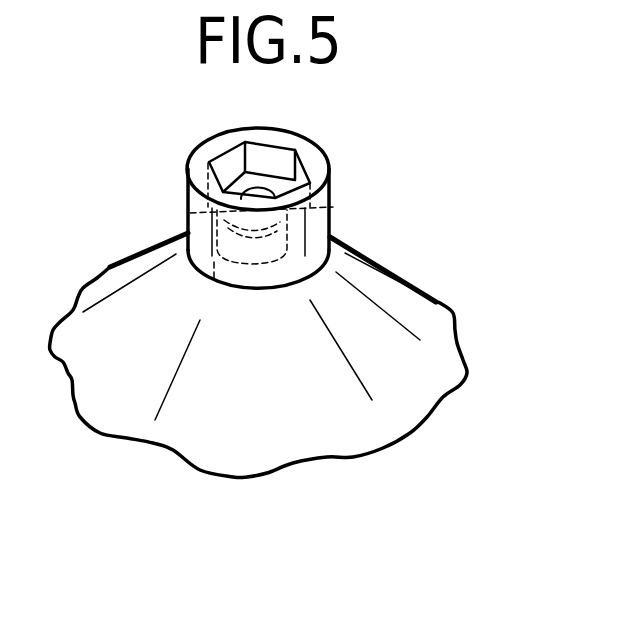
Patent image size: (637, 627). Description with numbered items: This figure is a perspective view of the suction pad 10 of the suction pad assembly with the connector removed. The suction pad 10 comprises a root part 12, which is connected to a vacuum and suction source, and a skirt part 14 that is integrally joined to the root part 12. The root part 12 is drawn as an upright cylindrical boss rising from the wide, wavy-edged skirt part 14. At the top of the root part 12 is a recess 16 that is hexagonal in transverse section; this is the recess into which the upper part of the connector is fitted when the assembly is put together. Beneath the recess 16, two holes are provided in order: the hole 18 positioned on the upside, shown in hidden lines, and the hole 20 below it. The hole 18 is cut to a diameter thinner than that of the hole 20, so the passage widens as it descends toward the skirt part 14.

The suction pad 10 is at (383, 235).
The root part 12 is at (333, 210).
The skirt part 14 is at (427, 313).
The recess 16 is at (223, 162).
The hole 18 is at (190, 213).
The hole 20 is at (214, 280).